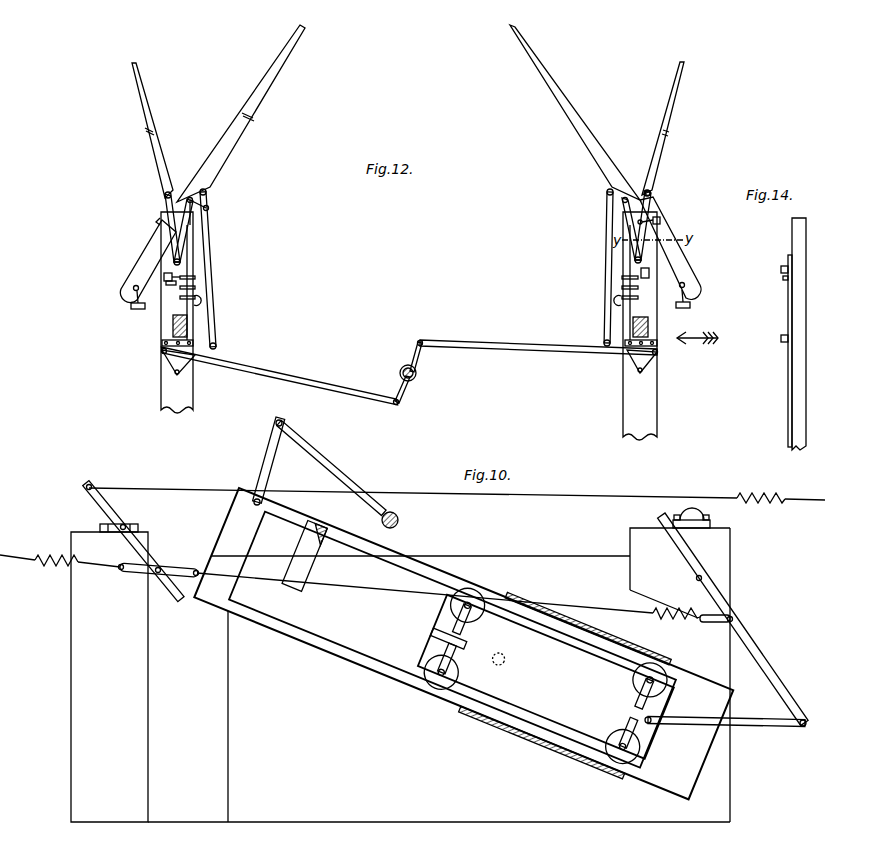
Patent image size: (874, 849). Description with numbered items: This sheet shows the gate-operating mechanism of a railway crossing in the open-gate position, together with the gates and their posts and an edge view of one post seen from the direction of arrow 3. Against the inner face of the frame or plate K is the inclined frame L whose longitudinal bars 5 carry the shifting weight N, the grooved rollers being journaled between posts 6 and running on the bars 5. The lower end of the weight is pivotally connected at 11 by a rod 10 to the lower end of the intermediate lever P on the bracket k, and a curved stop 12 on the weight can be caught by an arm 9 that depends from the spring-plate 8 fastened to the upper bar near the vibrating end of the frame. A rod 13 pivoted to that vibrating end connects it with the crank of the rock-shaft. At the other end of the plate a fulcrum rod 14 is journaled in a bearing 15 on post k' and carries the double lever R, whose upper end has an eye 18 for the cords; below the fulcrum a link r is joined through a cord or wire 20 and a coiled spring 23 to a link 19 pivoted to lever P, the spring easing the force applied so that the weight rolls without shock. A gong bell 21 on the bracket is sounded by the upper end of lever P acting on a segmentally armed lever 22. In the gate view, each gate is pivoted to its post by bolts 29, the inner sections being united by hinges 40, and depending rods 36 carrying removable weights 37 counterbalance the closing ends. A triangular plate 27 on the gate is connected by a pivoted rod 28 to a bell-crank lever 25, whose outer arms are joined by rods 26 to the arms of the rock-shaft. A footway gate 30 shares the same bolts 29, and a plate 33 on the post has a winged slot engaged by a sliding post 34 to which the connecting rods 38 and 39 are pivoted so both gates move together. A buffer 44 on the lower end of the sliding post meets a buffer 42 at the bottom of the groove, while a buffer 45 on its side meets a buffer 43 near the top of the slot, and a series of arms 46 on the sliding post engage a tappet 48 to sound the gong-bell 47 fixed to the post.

In FIG. 12, the arrow 3 is at (697, 345).
In FIG. 10, the longitudinal bars 5 is at (493, 720).
In FIG. 10, the posts 6 is at (544, 716).
In FIG. 10, the spring-plate 8 is at (317, 786).
In FIG. 10, the arm 9 is at (308, 679).
In FIG. 10, the rod 10 is at (763, 726).
In FIG. 10, the pivotal connection 11 is at (567, 726).
In FIG. 10, the curved stop 12 is at (457, 738).
In FIG. 10, the rod 13 is at (270, 455).
In FIG. 10, the fulcrum rod 14 is at (126, 525).
In FIG. 10, the bearing 15 is at (102, 525).
In FIG. 10, the eye 18 is at (92, 485).
In FIG. 10, the link 19 is at (726, 618).
In FIG. 10, the cord or wire 20 is at (425, 593).
In FIG. 10, the gong bell 21 is at (696, 511).
In FIG. 10, the segmentally armed lever 22 is at (712, 526).
In FIG. 10, the coiled spring 23 is at (676, 623).
In FIG. 12, the bell-crank lever 25 is at (190, 371).
In FIG. 12, the rods 26 is at (306, 382).
In FIG. 12, the triangular plate 27 is at (207, 192).
In FIG. 12, the pivoted rod 28 is at (607, 262).
In FIG. 12, the bolts 29 is at (660, 220).
In FIG. 12, the gate 30 is at (664, 148).
In FIG. 12, the plate 33 is at (651, 332).
In FIG. 14, the plate 33 is at (789, 298).
In FIG. 12, the sliding post 34 is at (640, 301).
In FIG. 12, the depending rods 36 is at (132, 298).
In FIG. 12, the removable weights 37 is at (137, 310).
In FIG. 12, the connecting rod 38 is at (188, 233).
In FIG. 12, the connecting rod 39 is at (168, 211).
In FIG. 12, the hinges 40 is at (253, 118).
In FIG. 12, the buffer 42 is at (162, 342).
In FIG. 14, the buffer 42 is at (782, 340).
In FIG. 12, the buffer 43 is at (166, 274).
In FIG. 14, the buffer 43 is at (781, 270).
In FIG. 12, the buffer 44 is at (650, 318).
In FIG. 12, the buffer 45 is at (168, 284).
In FIG. 14, the buffer 45 is at (784, 279).
In FIG. 12, the arms 46 is at (196, 286).
In FIG. 12, the gong-bell 47 is at (200, 300).
In FIG. 12, the tappet 48 is at (189, 310).